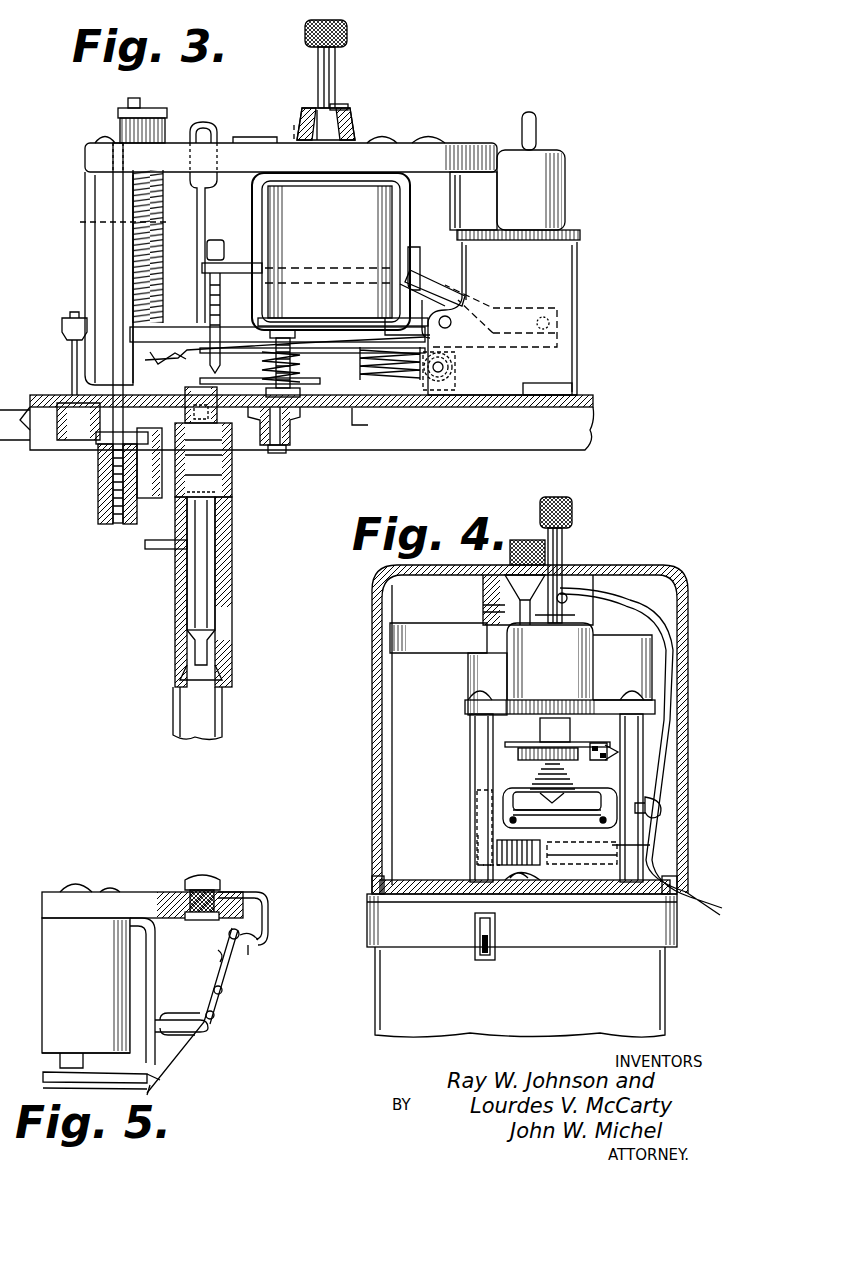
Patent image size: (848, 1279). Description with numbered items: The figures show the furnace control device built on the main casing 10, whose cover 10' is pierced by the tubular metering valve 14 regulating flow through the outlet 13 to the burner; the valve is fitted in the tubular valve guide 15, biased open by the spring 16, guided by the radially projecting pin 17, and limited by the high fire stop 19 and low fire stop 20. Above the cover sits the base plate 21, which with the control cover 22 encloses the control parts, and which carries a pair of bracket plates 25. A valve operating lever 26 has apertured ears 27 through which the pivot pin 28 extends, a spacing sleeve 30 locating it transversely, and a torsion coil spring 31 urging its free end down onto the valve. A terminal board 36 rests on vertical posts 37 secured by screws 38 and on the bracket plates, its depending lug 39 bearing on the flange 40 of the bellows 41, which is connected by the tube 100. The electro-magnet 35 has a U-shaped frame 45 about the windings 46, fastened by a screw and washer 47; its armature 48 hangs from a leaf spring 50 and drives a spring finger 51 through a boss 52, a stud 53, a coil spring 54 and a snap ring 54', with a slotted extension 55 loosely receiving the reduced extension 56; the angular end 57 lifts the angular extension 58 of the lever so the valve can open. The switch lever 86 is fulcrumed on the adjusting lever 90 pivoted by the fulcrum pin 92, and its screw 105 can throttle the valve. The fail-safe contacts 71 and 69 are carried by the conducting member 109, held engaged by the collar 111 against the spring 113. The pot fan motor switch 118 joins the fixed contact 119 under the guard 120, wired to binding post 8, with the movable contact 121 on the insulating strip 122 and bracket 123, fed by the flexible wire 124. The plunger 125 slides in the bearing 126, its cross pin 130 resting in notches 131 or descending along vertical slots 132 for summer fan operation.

In FIG. 5, the binding post 8 is at (212, 880).
In FIG. 4, the main casing 10 is at (520, 992).
In FIG. 3, the cover 10' is at (311, 421).
In FIG. 4, the cover 10' is at (535, 935).
In FIG. 3, the outlet 13 is at (220, 709).
In FIG. 3, the tubular metering valve 14 is at (190, 581).
In FIG. 3, the tubular valve guide 15 is at (230, 605).
In FIG. 3, the spring 16 is at (225, 478).
In FIG. 3, the radially projecting pin 17 is at (145, 546).
In FIG. 3, the high fire stop 19 is at (140, 528).
In FIG. 3, the low fire stop 20 is at (228, 414).
In FIG. 3, the base plate 21 is at (470, 412).
In FIG. 4, the base plate 21 is at (432, 897).
In FIG. 4, the control cover 22 is at (685, 600).
In FIG. 3, the bracket plates 25 is at (558, 368).
In FIG. 4, the bracket plates 25 is at (472, 760).
In FIG. 3, the valve operating lever 26 is at (360, 412).
In FIG. 4, the valve operating lever 26 is at (518, 878).
In FIG. 3, the ears 27 is at (456, 380).
In FIG. 4, the ears 27 is at (478, 838).
In FIG. 3, the pivot pin 28 is at (448, 366).
In FIG. 4, the pivot pin 28 is at (582, 845).
In FIG. 4, the spacing sleeve 30 is at (606, 862).
In FIG. 4, the torsion coil spring 31 is at (510, 838).
In FIG. 3, the electro-magnet 35 is at (396, 180).
In FIG. 5, the electro-magnet 35 is at (125, 920).
In FIG. 3, the terminal board 36 is at (450, 160).
In FIG. 4, the terminal board 36 is at (452, 642).
In FIG. 5, the terminal board 36 is at (95, 895).
In FIG. 3, the vertical posts 37 is at (88, 184).
In FIG. 3, the screws 38 is at (103, 127).
In FIG. 3, the lug 39 is at (466, 197).
In FIG. 4, the lug 39 is at (490, 678).
In FIG. 3, the flange 40 is at (580, 238).
In FIG. 4, the flange 40 is at (468, 712).
In FIG. 3, the bellows 41 is at (568, 193).
In FIG. 4, the bellows 41 is at (568, 670).
In FIG. 3, the U-shaped frame 45 is at (322, 178).
In FIG. 3, the windings 46 is at (330, 256).
In FIG. 3, the screw and washer 47 is at (350, 126).
In FIG. 3, the armature 48 is at (342, 326).
In FIG. 5, the armature 48 is at (70, 1070).
In FIG. 3, the leaf spring 50 is at (412, 275).
In FIG. 5, the leaf spring 50 is at (178, 1027).
In FIG. 3, the spring finger 51 is at (318, 350).
In FIG. 3, the boss 52 is at (385, 318).
In FIG. 3, the stud 53 is at (282, 330).
In FIG. 3, the coil spring 54 is at (289, 420).
In FIG. 3, the snap ring 54' is at (286, 466).
In FIG. 5, the slotted extension 55 is at (162, 1092).
In FIG. 5, the reduced extension 56 is at (160, 1084).
In FIG. 3, the angular end 57 is at (173, 365).
In FIG. 3, the angular extension 58 is at (185, 342).
In FIG. 4, the contact 69 is at (610, 750).
In FIG. 4, the contact 71 is at (600, 745).
In FIG. 3, the switch lever 86 is at (440, 290).
In FIG. 4, the switch lever 86 is at (582, 790).
In FIG. 3, the adjusting lever 90 is at (258, 337).
In FIG. 4, the adjusting lever 90 is at (612, 845).
In FIG. 3, the fulcrum pin 92 is at (452, 320).
In FIG. 3, the tube 100 is at (538, 128).
In FIG. 4, the tube 100 is at (675, 680).
In FIG. 3, the screw 105 is at (224, 282).
In FIG. 4, the conducting member 109 is at (522, 750).
In FIG. 4, the collar 111 is at (506, 746).
In FIG. 4, the spring 113 is at (530, 775).
In FIG. 5, the pot fan motor switch 118 is at (249, 952).
In FIG. 5, the fixed contact 119 is at (258, 940).
In FIG. 5, the guard 120 is at (270, 898).
In FIG. 5, the movable contact 121 is at (228, 938).
In FIG. 5, the insulating strip 122 is at (228, 975).
In FIG. 5, the bracket 123 is at (180, 1015).
In FIG. 5, the flexible wire 124 is at (218, 955).
In FIG. 3, the plunger 125 is at (335, 62).
In FIG. 4, the plunger 125 is at (562, 540).
In FIG. 3, the bearing 126 is at (298, 126).
In FIG. 4, the bearing 126 is at (590, 605).
In FIG. 3, the cross pin 130 is at (317, 120).
In FIG. 4, the cross pin 130 is at (565, 595).
In FIG. 3, the notches 131 is at (294, 125).
In FIG. 4, the notches 131 is at (552, 598).
In FIG. 3, the vertical slots 132 is at (338, 106).